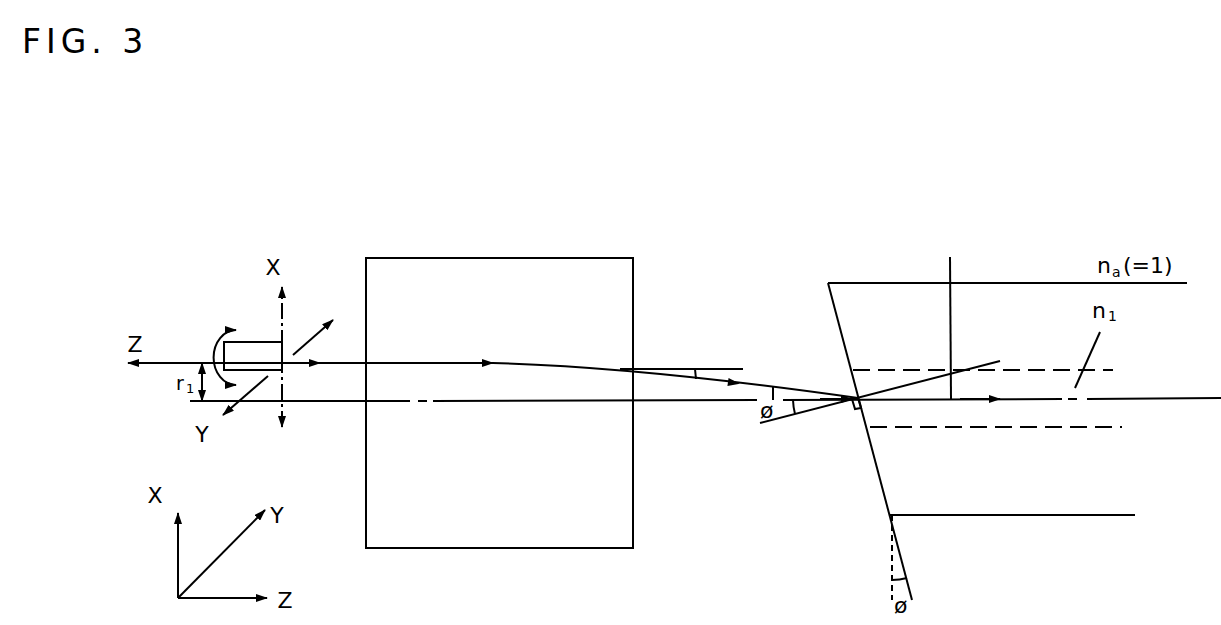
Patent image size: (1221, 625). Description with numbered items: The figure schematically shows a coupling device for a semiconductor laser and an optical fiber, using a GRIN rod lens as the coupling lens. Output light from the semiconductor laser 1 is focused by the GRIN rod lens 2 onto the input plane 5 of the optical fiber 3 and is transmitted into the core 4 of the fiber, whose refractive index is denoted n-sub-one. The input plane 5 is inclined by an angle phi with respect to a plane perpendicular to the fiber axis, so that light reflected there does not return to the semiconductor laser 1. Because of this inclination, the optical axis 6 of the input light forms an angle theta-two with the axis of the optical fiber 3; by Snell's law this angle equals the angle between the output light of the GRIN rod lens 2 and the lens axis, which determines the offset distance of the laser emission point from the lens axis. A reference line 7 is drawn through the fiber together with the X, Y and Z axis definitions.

The semiconductor laser 1 is at (252, 340).
The GRIN rod lens 2 is at (448, 517).
The optical fiber 3 is at (1018, 325).
The core 4 is at (1045, 432).
The input plane 5 is at (875, 460).
The optical axis of the optical fiber input light 6 is at (728, 386).
The reference plane 7 is at (946, 311).